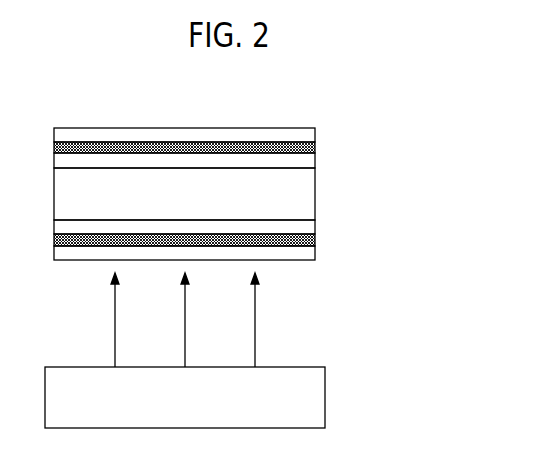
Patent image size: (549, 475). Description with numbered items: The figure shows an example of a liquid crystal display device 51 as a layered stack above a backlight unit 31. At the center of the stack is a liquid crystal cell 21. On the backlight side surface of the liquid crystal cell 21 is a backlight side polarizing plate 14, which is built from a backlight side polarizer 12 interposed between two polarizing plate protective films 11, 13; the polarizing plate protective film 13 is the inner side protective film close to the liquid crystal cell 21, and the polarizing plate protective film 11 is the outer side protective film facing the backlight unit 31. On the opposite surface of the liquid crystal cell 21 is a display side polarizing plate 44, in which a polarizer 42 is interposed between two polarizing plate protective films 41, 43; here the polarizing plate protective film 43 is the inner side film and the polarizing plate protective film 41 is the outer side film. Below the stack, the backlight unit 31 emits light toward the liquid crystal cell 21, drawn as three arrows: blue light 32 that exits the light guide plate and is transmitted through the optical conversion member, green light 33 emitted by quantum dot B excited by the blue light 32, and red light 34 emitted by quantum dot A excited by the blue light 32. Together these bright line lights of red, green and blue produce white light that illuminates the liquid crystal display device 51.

The polarizing plate protective film 11 is at (225, 265).
The backlight side polarizer 12 is at (315, 240).
The polarizing plate protective film 13 is at (315, 227).
The backlight side polarizing plate 14 is at (252, 246).
The liquid crystal cell 21 is at (315, 195).
The backlight unit 31 is at (325, 398).
The blue light 32 is at (115, 317).
The green light 33 is at (185, 317).
The red light 34 is at (255, 317).
The polarizing plate protective film 41 is at (315, 135).
The polarizer 42 is at (315, 148).
The polarizing plate protective film 43 is at (225, 164).
The display side polarizing plate 44 is at (252, 138).
The liquid crystal display device 51 is at (274, 269).